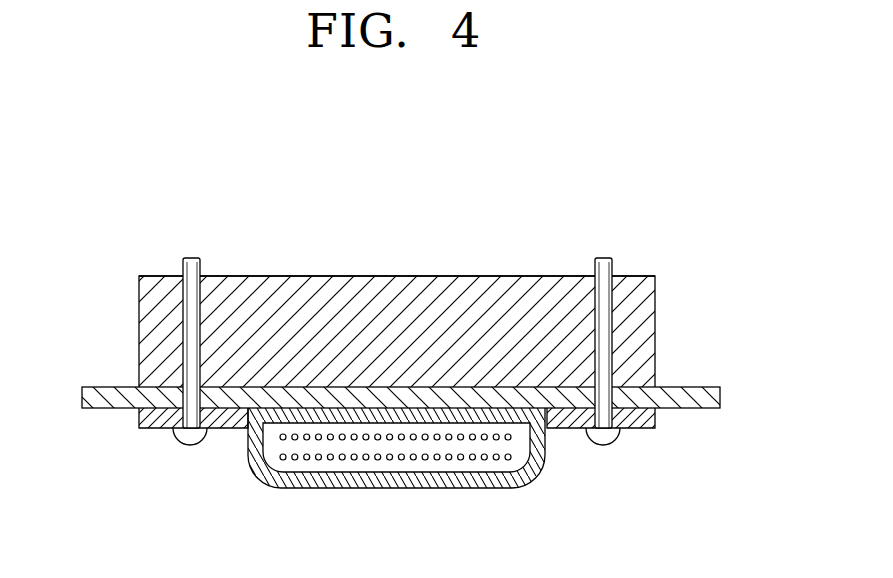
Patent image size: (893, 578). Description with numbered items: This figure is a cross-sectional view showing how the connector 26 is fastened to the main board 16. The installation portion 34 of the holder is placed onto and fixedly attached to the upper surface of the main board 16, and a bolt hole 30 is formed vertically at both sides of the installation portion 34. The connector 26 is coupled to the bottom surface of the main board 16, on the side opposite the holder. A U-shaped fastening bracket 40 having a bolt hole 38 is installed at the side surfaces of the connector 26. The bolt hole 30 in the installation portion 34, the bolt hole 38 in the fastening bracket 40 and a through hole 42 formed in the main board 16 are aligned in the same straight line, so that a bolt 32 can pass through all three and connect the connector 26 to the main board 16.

The main board 16 is at (697, 408).
The connector 26 is at (367, 460).
The bolt hole 30 is at (442, 359).
The bolt 32 is at (190, 297).
The installation portion 34 is at (456, 288).
The bolt hole 38 is at (584, 432).
The fastening bracket 40 is at (160, 425).
The through hole 42 is at (631, 418).